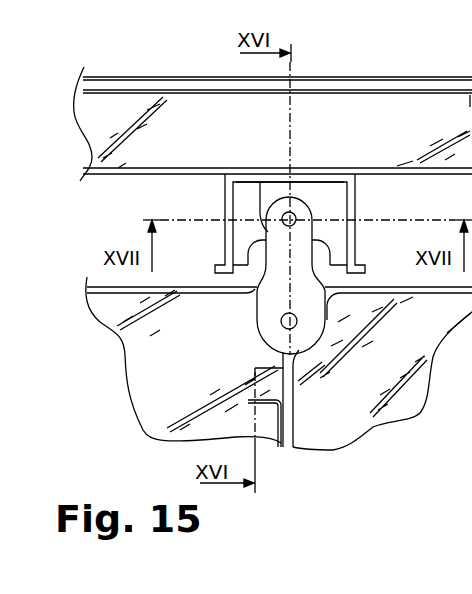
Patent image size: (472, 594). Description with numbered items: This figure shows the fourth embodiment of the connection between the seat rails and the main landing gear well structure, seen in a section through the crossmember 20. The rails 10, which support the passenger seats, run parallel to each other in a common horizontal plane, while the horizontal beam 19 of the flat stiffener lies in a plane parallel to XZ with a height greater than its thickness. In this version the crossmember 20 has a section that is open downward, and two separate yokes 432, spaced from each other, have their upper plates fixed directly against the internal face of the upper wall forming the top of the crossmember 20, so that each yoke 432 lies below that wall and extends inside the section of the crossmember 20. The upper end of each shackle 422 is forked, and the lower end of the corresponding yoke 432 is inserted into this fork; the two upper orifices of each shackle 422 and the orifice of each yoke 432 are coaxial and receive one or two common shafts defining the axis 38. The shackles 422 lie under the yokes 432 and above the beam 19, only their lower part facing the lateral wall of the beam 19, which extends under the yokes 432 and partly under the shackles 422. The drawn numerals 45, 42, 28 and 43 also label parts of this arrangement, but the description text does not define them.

The upper body / panel 10 is at (373, 125).
The lower body / panel 19 is at (347, 413).
The bracket 20 is at (358, 208).
The bracket inner wall 432 is at (326, 200).
The retaining tab 45 is at (250, 200).
The clip upper portion 42 is at (328, 233).
The upper pin hole 38 is at (289, 219).
The clip lower lobe 422 is at (273, 300).
The lower pin hole 28 is at (281, 324).
The side element 43 is at (459, 379).